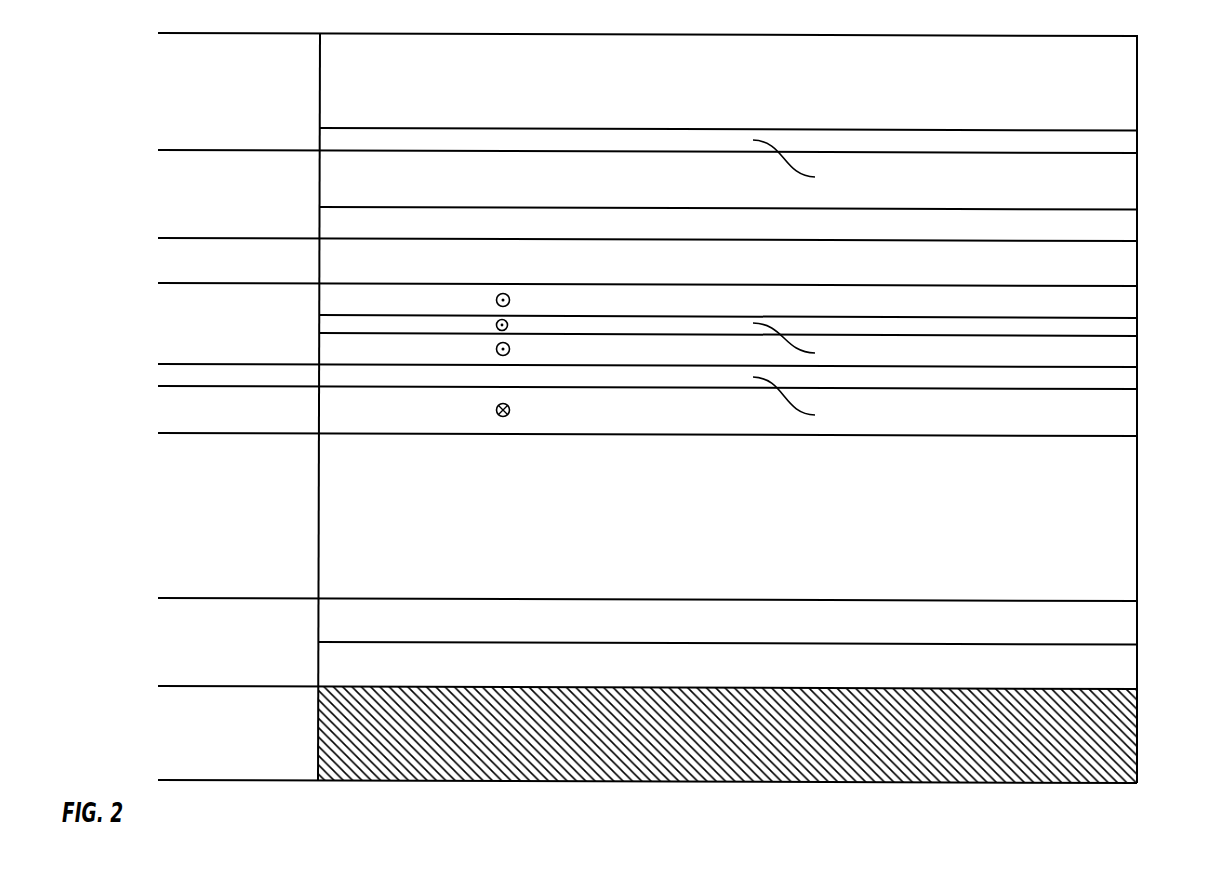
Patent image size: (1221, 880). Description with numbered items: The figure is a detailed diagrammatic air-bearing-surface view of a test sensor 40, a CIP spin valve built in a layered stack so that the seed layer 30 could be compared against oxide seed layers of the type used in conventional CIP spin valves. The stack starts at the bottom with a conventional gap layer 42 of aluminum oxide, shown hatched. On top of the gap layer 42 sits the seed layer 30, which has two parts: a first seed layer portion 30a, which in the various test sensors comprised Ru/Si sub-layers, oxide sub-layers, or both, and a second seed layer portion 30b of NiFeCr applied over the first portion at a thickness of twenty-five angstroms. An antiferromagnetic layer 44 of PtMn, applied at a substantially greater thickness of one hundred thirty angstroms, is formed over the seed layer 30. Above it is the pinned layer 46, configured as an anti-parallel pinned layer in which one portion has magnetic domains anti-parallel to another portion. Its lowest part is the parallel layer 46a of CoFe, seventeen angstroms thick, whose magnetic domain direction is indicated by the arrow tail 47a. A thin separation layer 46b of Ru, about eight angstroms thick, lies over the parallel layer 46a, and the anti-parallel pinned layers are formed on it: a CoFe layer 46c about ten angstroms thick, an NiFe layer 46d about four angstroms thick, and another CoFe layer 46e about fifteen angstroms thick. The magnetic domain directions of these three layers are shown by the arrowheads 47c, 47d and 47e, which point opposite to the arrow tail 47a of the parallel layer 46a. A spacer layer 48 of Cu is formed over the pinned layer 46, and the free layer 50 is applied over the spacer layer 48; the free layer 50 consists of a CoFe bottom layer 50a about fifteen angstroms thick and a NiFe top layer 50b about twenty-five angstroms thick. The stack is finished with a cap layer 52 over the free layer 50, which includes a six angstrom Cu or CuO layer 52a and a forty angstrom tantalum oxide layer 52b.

The test sensor 40 is at (385, 798).
The gap layer 42 is at (1142, 689).
The seed layer 30 is at (1142, 601).
The first seed layer portion 30a is at (1051, 679).
The second seed layer portion 30b is at (1051, 634).
The antiferromagnetic layer 44 is at (1047, 529).
The pinned layer 46 is at (1142, 286).
The parallel layer 46a is at (1053, 424).
The separation layer 46b is at (1030, 378).
The CoFe layer 46c is at (1053, 364).
The NiFe layer 46d is at (1033, 327).
The CoFe layer 46e is at (1053, 314).
The arrow tail 47a is at (494, 410).
The arrowhead 47c is at (494, 349).
The arrowhead 47d is at (507, 327).
The arrowhead 47e is at (494, 300).
The spacer layer 48 is at (1142, 240).
The free layer 50 is at (1142, 153).
The CoFe bottom layer 50a is at (1053, 237).
The NiFe top layer 50b is at (1053, 196).
The cap layer 52 is at (1142, 35).
The Cu (or CuO) layer 52a is at (1030, 142).
The TaxOy layer 52b is at (1053, 98).